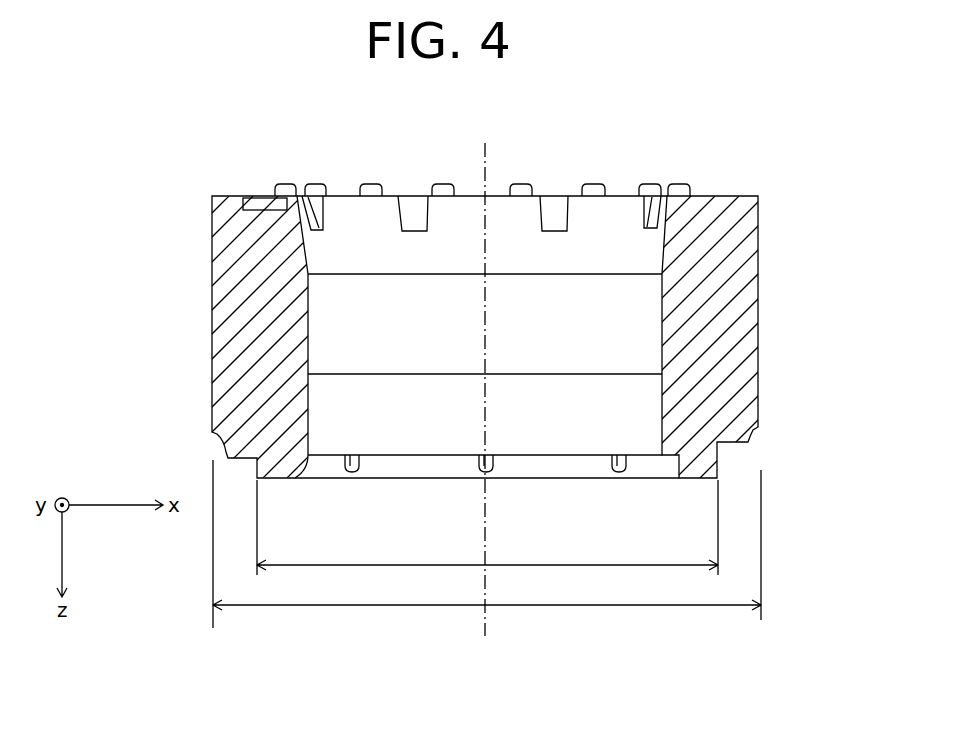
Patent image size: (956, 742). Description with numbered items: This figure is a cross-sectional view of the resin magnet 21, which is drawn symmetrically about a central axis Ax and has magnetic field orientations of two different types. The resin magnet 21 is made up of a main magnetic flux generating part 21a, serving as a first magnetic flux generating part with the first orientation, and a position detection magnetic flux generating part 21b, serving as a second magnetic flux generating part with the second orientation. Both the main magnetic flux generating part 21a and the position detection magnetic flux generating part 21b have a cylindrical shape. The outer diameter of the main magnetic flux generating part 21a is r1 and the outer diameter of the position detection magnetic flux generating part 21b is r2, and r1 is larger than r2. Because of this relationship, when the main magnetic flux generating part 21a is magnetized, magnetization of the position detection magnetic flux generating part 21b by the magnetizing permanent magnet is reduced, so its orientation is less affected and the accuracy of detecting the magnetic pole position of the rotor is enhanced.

The resin magnet 21 is at (175, 162).
The main magnetic flux generating part 21a is at (767, 187).
The position detection magnetic flux generating part 21b is at (768, 440).
The central axis Ax is at (483, 376).
The outer diameter of the main magnetic flux generating part r1 is at (487, 551).
The outer diameter of the position detection magnetic flux generating part r2 is at (487, 527).